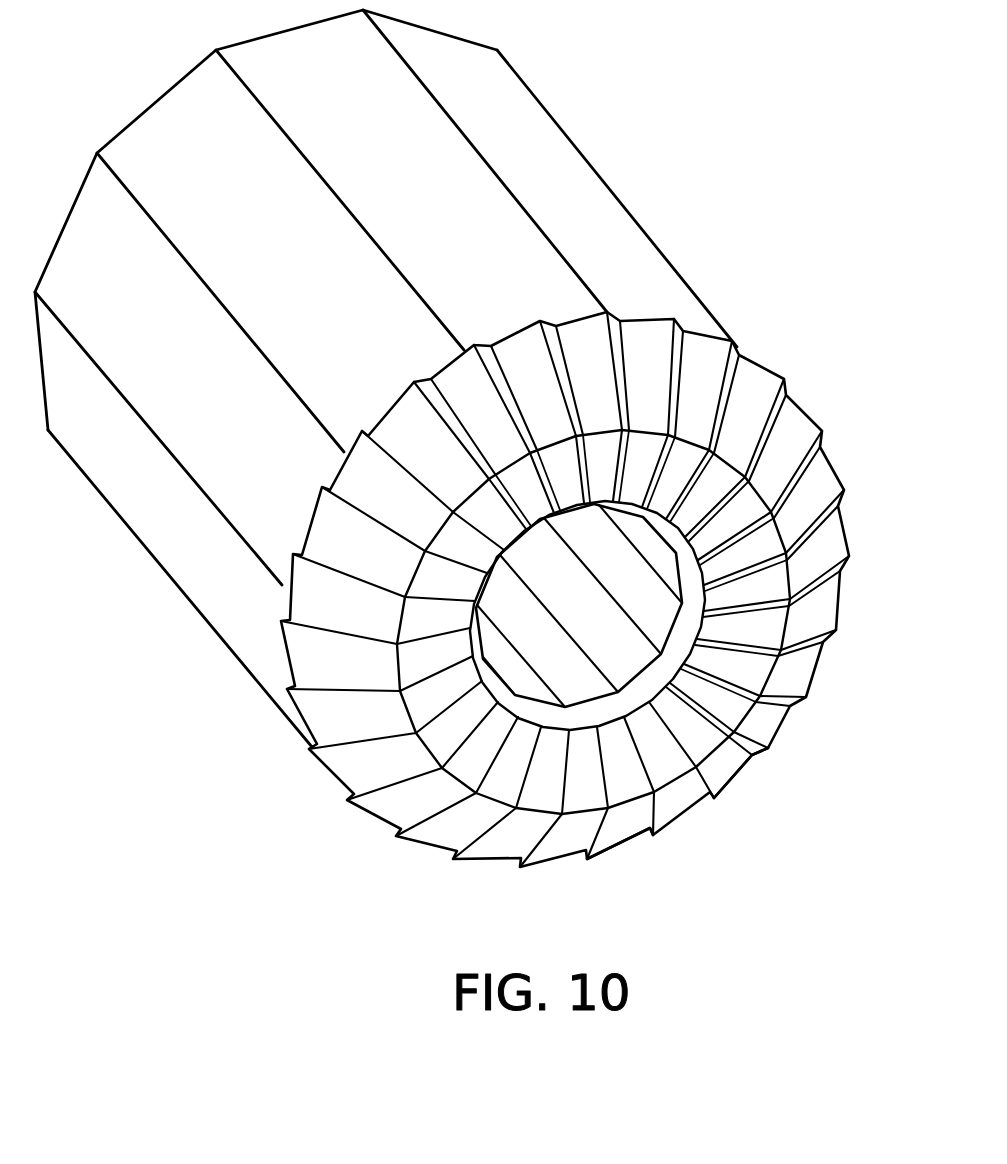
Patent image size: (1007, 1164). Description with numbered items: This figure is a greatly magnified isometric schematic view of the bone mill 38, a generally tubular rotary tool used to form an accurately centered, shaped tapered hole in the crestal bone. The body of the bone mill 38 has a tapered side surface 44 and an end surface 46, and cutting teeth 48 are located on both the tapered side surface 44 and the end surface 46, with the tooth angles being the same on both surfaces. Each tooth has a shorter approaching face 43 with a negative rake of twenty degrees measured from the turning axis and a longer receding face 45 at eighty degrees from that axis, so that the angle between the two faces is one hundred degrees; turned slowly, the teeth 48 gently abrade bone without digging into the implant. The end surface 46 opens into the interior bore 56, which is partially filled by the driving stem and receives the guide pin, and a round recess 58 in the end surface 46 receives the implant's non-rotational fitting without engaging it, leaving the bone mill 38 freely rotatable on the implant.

The bone mill 38 is at (600, 208).
The tapered side surface 44 is at (649, 317).
The cutting teeth 48 is at (841, 433).
The end surface 46 is at (757, 628).
The approaching face 43 is at (797, 693).
The receding face 45 is at (567, 852).
The round recess 58 is at (647, 710).
The interior bore 56 is at (513, 530).